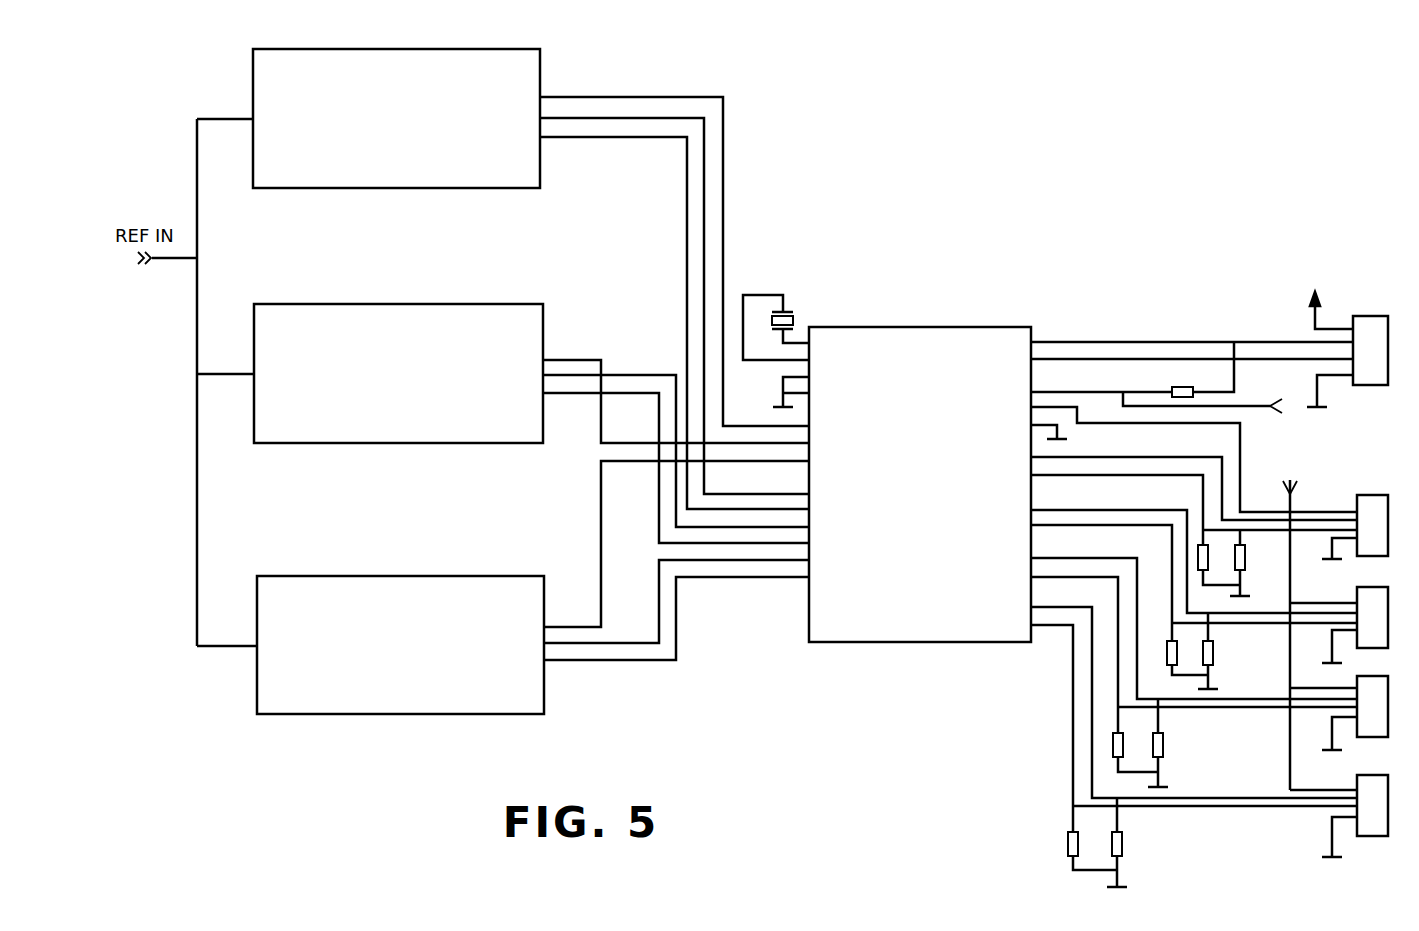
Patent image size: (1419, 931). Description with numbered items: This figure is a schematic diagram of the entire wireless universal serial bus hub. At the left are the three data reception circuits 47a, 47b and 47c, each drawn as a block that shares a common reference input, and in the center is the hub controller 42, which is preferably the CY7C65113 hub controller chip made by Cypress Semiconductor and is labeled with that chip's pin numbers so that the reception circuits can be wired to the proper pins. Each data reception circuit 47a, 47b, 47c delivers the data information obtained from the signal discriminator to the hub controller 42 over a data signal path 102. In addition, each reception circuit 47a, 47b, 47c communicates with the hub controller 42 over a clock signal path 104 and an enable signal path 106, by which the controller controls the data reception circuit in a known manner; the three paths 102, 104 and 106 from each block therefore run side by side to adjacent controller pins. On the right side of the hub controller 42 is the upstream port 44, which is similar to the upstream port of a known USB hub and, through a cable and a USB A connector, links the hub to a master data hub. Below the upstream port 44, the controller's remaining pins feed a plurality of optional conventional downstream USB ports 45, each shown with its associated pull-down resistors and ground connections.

The data reception circuit 47a is at (364, 183).
The data reception circuit 47b is at (361, 433).
The data reception circuit 47c is at (354, 708).
The data signal path 102 is at (575, 627).
The clock signal path 104 is at (588, 705).
The enable signal path 106 is at (655, 707).
The hub controller 42 is at (925, 637).
The upstream port 44 is at (1377, 322).
The downstream USB ports 45 is at (1373, 500).